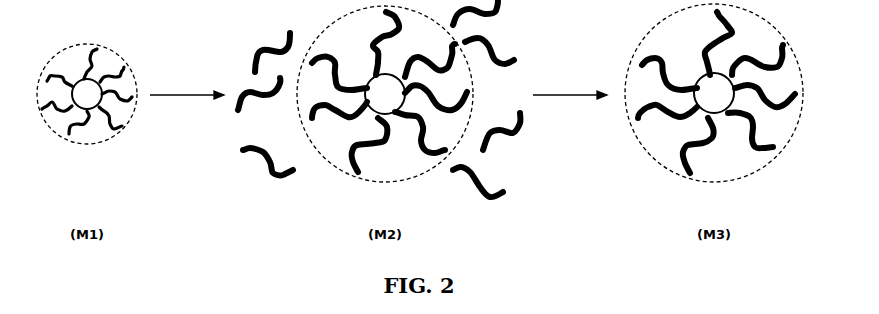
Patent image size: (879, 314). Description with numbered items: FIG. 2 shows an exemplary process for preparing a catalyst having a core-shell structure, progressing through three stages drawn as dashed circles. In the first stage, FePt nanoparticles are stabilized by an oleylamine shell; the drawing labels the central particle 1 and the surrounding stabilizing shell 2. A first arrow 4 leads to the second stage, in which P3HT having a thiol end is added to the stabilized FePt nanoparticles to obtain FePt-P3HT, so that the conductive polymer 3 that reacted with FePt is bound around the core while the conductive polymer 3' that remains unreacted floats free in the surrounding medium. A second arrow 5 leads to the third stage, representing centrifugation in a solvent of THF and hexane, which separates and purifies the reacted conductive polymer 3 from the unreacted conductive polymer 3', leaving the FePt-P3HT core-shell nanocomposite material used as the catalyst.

The core particle 1 is at (87, 82).
The polymer chain bound to core 2 is at (92, 128).
The conductive polymer 3 is at (386, 114).
The conductive polymer that remains unreacted 3' is at (373, 109).
The first step (polymerization) 4 is at (178, 95).
The second step (purification) 5 is at (560, 95).